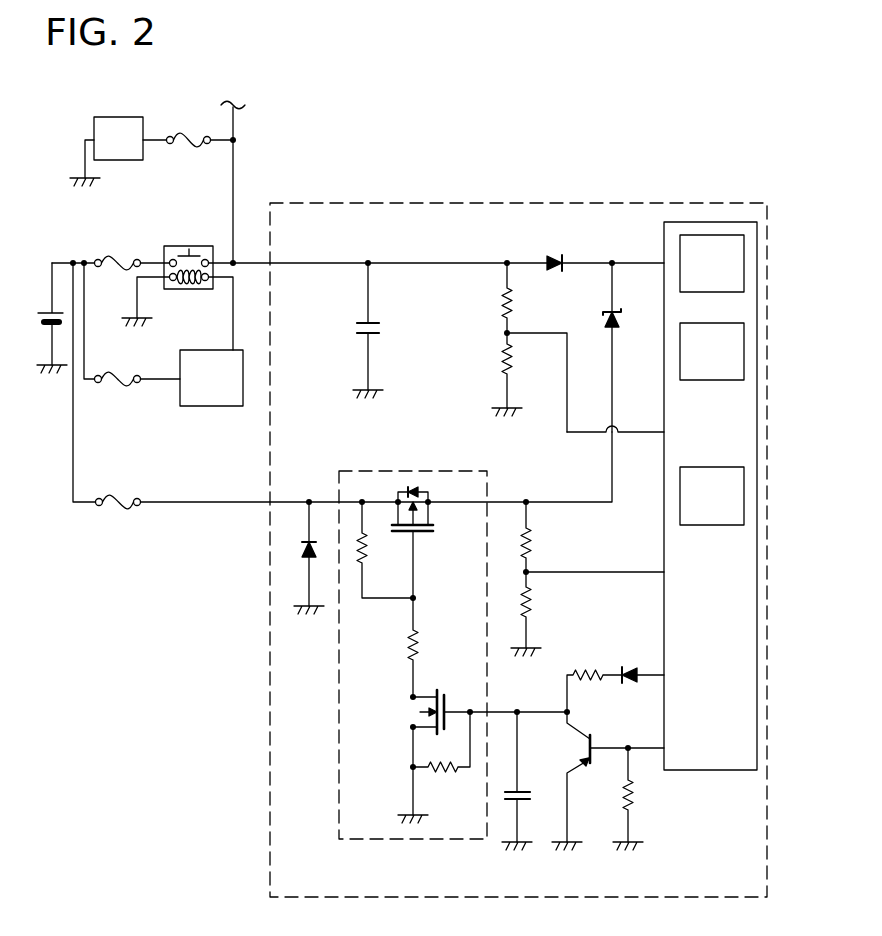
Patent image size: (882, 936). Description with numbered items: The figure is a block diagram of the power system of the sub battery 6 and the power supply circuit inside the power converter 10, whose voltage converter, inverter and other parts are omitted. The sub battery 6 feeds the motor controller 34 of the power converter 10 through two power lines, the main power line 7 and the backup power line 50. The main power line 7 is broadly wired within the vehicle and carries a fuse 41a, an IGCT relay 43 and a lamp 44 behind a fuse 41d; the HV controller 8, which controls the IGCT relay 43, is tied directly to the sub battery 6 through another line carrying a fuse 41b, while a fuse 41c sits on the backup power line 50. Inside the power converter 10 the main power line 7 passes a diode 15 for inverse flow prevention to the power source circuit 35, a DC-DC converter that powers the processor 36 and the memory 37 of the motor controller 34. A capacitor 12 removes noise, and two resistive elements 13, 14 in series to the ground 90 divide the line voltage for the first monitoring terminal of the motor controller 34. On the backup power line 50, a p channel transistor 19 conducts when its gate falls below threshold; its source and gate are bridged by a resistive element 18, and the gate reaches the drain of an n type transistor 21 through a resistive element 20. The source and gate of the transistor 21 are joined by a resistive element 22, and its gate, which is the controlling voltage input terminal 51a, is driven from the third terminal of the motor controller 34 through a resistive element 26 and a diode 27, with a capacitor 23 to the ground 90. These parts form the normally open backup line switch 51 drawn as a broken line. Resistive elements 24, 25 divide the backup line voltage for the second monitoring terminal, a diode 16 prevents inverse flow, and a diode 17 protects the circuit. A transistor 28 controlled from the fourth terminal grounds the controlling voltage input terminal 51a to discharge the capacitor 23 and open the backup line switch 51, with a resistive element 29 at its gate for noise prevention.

The sub battery 6 is at (44, 308).
The main power line 7 is at (246, 260).
The HV controller 8 is at (213, 406).
The power converter 10 is at (322, 203).
The capacitor 12 is at (360, 325).
The resistive element 13 is at (503, 298).
The resistive element 14 is at (503, 358).
The diode 15 is at (550, 257).
The diode 16 is at (603, 315).
The diode 17 is at (302, 553).
The resistive element 18 is at (358, 567).
The transistor 19 is at (420, 532).
The resistive element 20 is at (405, 648).
The transistor 21 is at (440, 692).
The resistive element 22 is at (445, 772).
The capacitor 23 is at (522, 790).
The resistive element 24 is at (535, 546).
The resistive element 25 is at (535, 605).
The resistive element 26 is at (580, 670).
The diode 27 is at (628, 668).
The transistor 28 is at (592, 740).
The resistive element 29 is at (636, 800).
The motor controller 34 is at (664, 244).
The power source circuit 35 is at (712, 235).
The processor 36 is at (680, 350).
The memory 37 is at (680, 503).
The fuse 41a is at (112, 261).
The fuse 41b is at (124, 386).
The fuse 41c is at (120, 508).
The fuse 41d is at (183, 133).
The IGCT relay 43 is at (185, 246).
The lamp 44 is at (106, 117).
The backup power line 50 is at (200, 505).
The backup line switch 51 is at (339, 825).
The controlling voltage input terminal 51a is at (472, 710).
The ground 90 is at (74, 180).